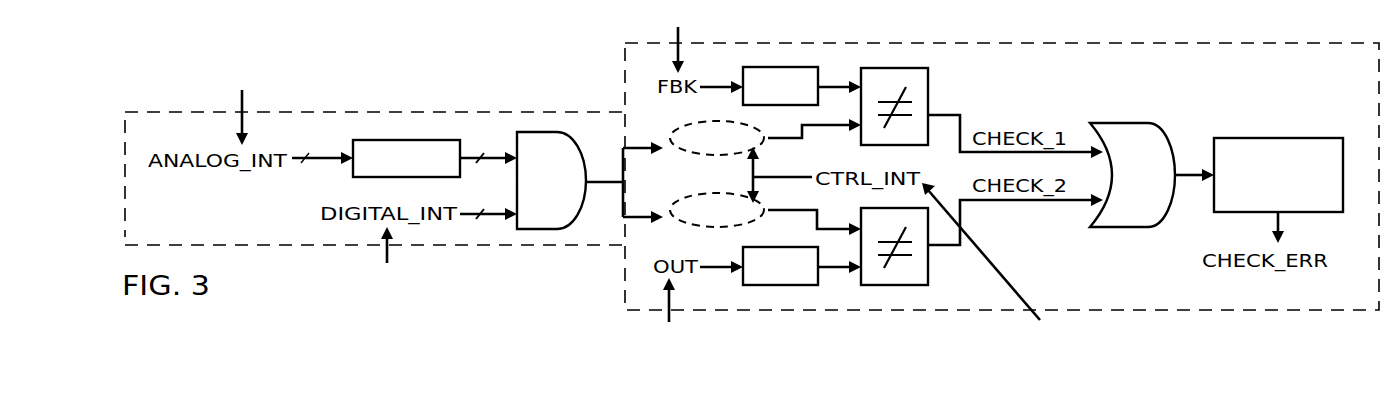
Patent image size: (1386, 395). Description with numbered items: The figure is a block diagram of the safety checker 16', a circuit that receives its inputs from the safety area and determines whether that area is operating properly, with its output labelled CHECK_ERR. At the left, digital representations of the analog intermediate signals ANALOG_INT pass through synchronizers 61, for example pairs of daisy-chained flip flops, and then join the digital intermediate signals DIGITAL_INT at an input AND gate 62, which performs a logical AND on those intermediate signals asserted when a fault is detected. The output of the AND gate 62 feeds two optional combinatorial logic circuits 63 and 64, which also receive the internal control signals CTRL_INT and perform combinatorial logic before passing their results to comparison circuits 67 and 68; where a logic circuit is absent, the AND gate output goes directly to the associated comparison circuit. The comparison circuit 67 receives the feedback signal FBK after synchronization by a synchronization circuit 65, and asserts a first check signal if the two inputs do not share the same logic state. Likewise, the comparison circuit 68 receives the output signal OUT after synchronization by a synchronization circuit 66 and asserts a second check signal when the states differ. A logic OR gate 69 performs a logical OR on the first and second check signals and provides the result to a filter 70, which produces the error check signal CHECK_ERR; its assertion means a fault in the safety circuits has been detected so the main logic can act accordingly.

The safety checker 16' is at (375, 162).
The synchronizers 61 is at (395, 140).
The input AND gate 62 is at (551, 180).
The combinatorial logic circuit 63 is at (668, 138).
The combinatorial logic circuit 64 is at (670, 225).
The synchronization circuit 65 is at (780, 67).
The synchronization circuit 66 is at (785, 285).
The comparison circuit 67 is at (900, 68).
The comparison circuit 68 is at (895, 285).
The logic OR gate 69 is at (1132, 175).
The filter 70 is at (1308, 138).